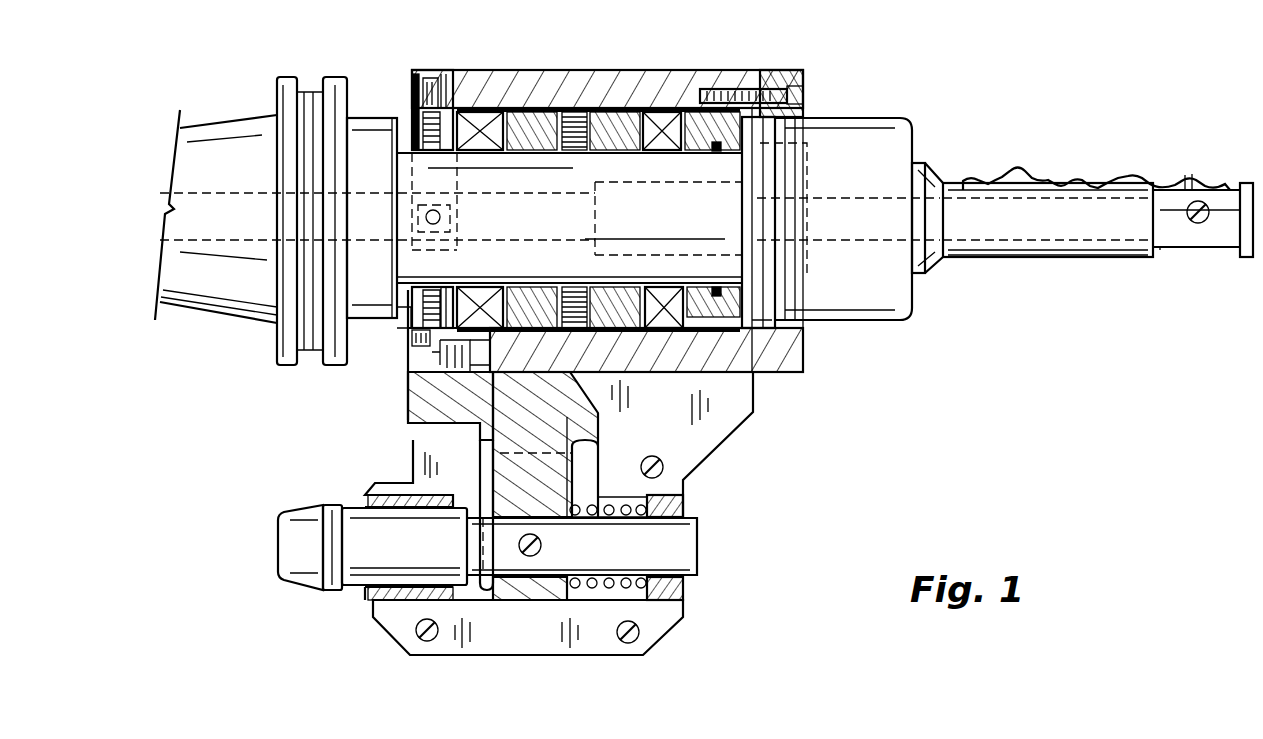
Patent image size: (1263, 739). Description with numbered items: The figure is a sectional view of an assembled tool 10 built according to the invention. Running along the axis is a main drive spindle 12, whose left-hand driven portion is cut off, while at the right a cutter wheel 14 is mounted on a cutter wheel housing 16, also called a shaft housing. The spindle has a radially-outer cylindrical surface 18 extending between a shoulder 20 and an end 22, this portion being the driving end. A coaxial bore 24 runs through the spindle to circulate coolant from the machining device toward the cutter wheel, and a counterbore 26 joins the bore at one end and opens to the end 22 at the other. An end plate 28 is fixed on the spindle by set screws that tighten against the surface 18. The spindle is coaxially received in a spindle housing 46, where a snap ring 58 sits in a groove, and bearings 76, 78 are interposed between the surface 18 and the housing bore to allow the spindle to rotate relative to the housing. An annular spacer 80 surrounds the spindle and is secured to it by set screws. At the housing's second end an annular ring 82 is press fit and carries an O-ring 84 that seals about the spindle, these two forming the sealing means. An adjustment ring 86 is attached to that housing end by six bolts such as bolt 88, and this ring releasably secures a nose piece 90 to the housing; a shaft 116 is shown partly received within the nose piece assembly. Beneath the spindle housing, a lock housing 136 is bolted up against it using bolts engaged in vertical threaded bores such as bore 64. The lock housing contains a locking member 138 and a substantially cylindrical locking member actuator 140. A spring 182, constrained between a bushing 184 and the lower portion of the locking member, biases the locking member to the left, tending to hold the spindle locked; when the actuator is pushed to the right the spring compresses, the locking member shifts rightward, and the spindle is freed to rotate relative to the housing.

The tool 10 is at (908, 93).
The main drive spindle 12 is at (218, 150).
The cutter wheel 14 is at (1213, 178).
The cutter wheel housing 16 is at (1103, 182).
The radially-outer cylindrical surface 18 is at (408, 150).
The shoulder 20 is at (400, 322).
The end 22 is at (777, 280).
The coaxial bore 24 is at (210, 205).
The counterbore 26 is at (640, 255).
The end plate 28 is at (418, 70).
The spindle housing 46 is at (482, 80).
The snap ring 58 is at (460, 108).
The vertical threaded bore 64 is at (457, 350).
The bearing 76 is at (490, 100).
The bearing 78 is at (660, 108).
The annular spacer 80 is at (605, 108).
The annular ring 82 is at (706, 92).
The O-ring 84 is at (718, 152).
The adjustment ring 86 is at (772, 75).
The bolt 88 is at (805, 93).
The nose piece 90 is at (913, 132).
The shaft 116 is at (1040, 198).
The lock housing 136 is at (715, 420).
The locking member 138 is at (425, 430).
The locking member actuator 140 is at (305, 505).
The spring 182 is at (688, 590).
The bushing 184 is at (690, 503).